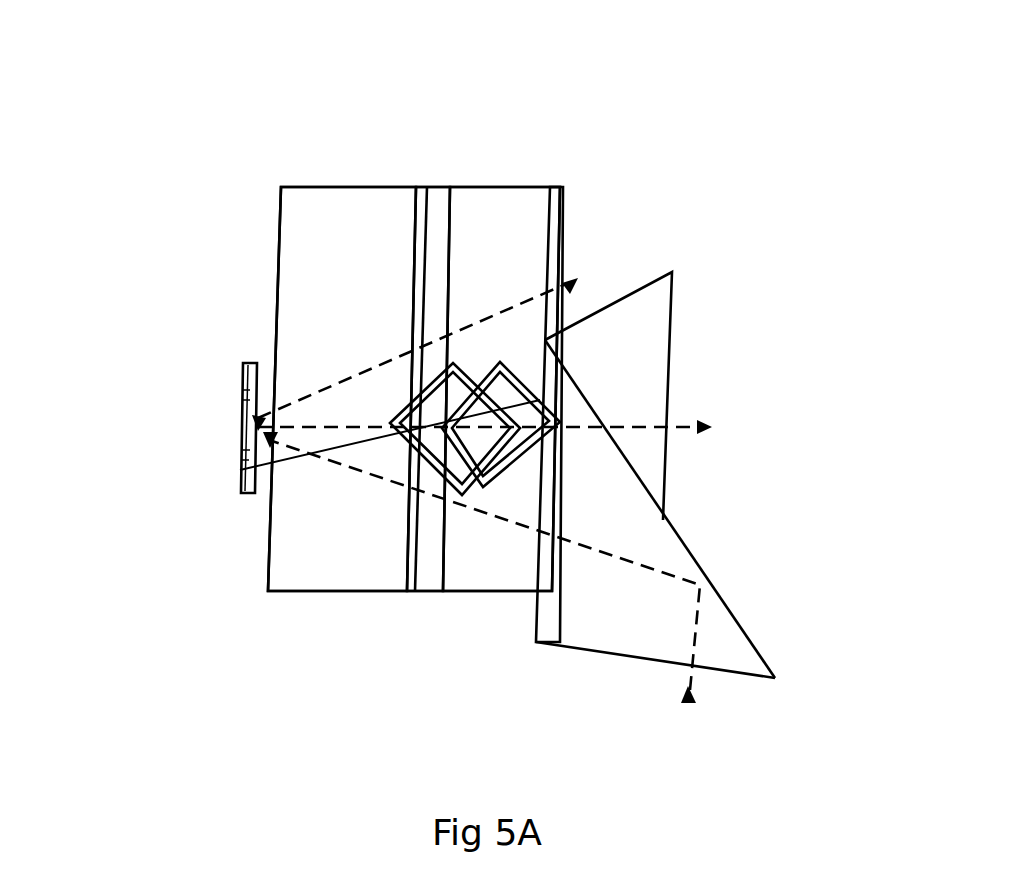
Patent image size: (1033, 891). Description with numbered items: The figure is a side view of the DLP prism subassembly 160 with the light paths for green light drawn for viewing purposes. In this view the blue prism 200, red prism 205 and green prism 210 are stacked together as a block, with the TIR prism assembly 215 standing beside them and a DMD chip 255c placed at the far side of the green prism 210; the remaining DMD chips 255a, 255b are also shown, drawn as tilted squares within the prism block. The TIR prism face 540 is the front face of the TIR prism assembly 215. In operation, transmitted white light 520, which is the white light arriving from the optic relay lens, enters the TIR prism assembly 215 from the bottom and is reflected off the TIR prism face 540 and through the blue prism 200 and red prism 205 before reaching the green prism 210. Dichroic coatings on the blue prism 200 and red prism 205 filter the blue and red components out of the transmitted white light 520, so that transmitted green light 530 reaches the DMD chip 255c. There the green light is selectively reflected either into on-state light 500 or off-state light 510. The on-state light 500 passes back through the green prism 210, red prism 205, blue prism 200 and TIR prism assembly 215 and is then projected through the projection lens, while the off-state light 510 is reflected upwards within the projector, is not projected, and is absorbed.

The DLP prism subassembly 160 is at (272, 86).
The green prism 210 is at (354, 186).
The red prism 205 is at (485, 591).
The blue prism 200 is at (562, 187).
The TIR prism assembly 215 is at (698, 280).
The TIR prism face 540 is at (697, 565).
The DMD chip 255c is at (241, 450).
The DMD chip 255a is at (445, 418).
The DMD chip 255b is at (432, 433).
The transmitted green light 530 is at (240, 470).
The off-state light 510 is at (529, 305).
The on-state light 500 is at (673, 426).
The transmitted white light 520 is at (689, 666).